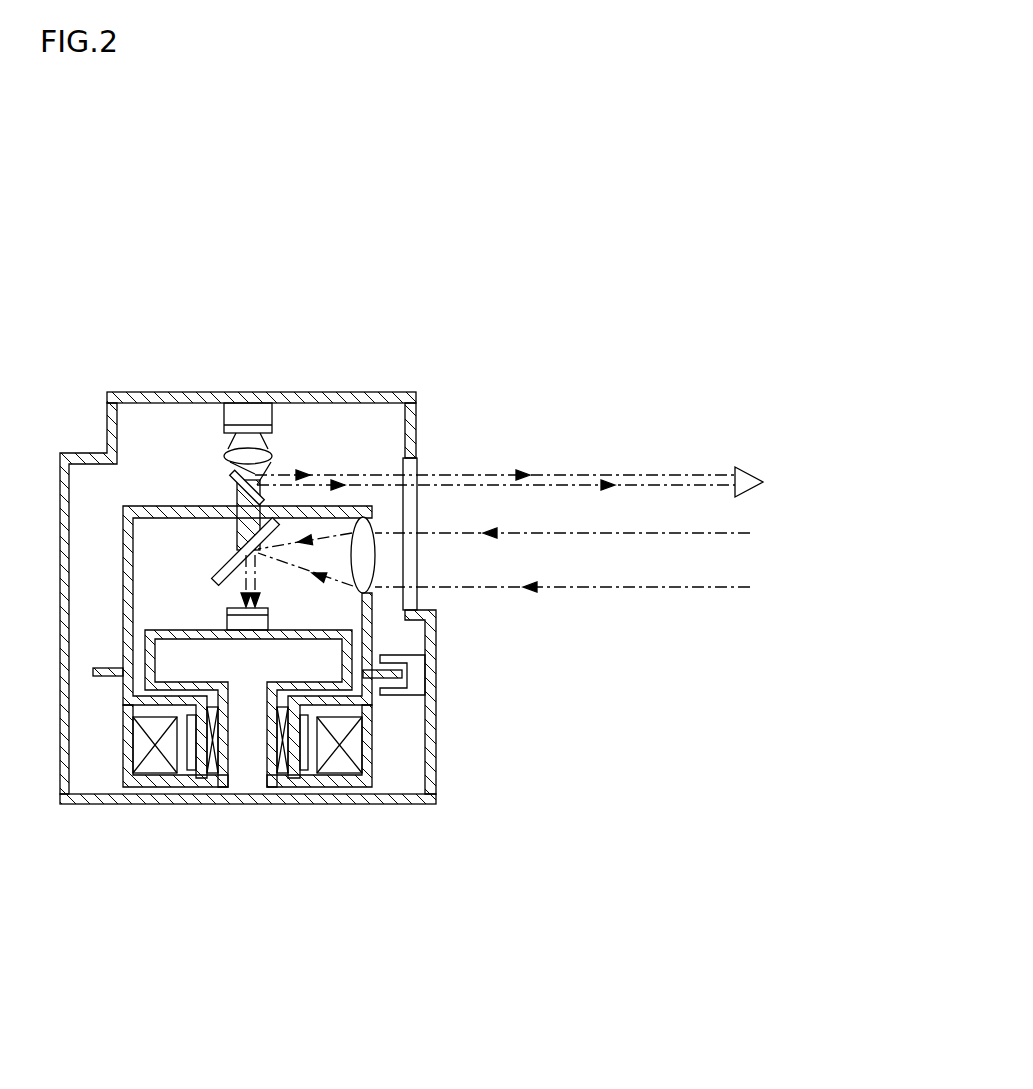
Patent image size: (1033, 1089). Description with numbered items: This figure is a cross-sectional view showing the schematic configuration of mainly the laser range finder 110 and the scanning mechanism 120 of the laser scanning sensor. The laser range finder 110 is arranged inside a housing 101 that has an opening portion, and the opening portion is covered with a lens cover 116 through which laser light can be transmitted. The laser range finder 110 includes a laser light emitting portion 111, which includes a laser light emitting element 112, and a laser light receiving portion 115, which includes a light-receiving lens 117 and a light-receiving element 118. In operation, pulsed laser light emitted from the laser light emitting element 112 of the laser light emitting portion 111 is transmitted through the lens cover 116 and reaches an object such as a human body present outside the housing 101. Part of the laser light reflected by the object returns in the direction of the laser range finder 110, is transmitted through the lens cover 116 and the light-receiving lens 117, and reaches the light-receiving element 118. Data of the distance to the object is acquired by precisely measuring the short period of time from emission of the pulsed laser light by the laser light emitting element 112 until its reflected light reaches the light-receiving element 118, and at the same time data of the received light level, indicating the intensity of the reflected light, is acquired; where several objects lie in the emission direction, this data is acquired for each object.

The housing 101 is at (307, 393).
The laser range finder 110 is at (390, 391).
The laser light emitting portion 111 is at (433, 463).
The laser light emitting element 112 is at (224, 410).
The laser light receiving portion 115 is at (436, 597).
The lens cover 116 is at (413, 560).
The light-receiving lens 117 is at (355, 592).
The light-receiving element 118 is at (226, 622).
The scanning mechanism 120 is at (268, 818).